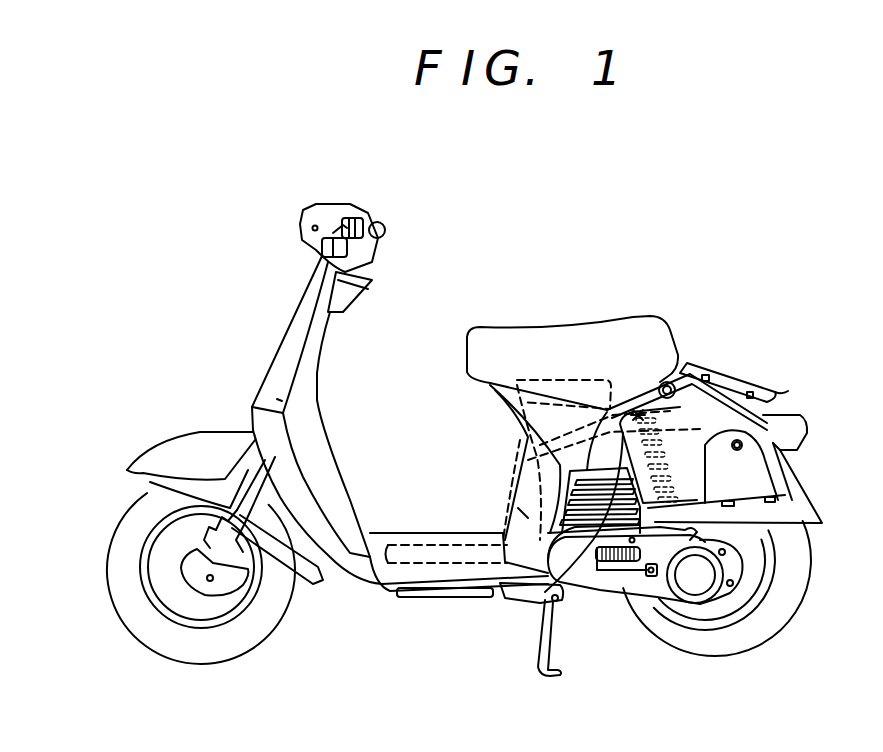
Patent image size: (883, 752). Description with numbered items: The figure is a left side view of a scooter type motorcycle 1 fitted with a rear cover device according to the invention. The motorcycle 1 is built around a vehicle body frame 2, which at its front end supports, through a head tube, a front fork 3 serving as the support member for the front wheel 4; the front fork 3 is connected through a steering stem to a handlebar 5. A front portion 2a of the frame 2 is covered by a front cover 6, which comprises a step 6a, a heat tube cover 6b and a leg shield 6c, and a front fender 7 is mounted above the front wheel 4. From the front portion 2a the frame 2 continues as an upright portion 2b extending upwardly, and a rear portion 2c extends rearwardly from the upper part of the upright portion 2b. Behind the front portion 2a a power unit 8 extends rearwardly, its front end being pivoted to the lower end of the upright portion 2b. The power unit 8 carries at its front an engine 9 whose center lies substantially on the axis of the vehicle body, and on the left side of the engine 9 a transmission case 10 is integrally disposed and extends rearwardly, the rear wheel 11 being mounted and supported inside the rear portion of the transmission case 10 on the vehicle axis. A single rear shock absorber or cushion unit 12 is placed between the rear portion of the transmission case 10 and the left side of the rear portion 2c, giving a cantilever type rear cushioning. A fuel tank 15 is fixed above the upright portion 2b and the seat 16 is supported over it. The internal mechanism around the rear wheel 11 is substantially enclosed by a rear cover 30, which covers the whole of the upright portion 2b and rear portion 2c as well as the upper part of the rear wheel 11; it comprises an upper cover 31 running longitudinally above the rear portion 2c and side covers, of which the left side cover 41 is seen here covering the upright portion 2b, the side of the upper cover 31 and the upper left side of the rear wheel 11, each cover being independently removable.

The motorcycle 1 is at (392, 282).
The vehicle body frame 2 is at (473, 560).
The front portion 2a is at (438, 550).
The upright portion 2b is at (528, 477).
The rear portion 2c is at (678, 412).
The front fork 3 is at (210, 528).
The front wheel 4 is at (185, 647).
The handlebar 5 is at (386, 226).
The front cover 6 is at (400, 553).
The step 6a is at (447, 563).
The heat tube cover 6b is at (317, 360).
The leg shield 6c is at (273, 440).
The front fender 7 is at (182, 452).
The power unit 8 is at (593, 577).
The engine 9 is at (690, 487).
The transmission case 10 is at (650, 583).
The rear wheel 11 is at (742, 642).
The rear shock absorber or cushion unit 12 is at (672, 430).
The fuel tank 15 is at (542, 380).
The seat 16 is at (588, 343).
The rear cover 30 is at (523, 513).
The upper cover 31 is at (738, 398).
The left side cover 41 is at (553, 574).